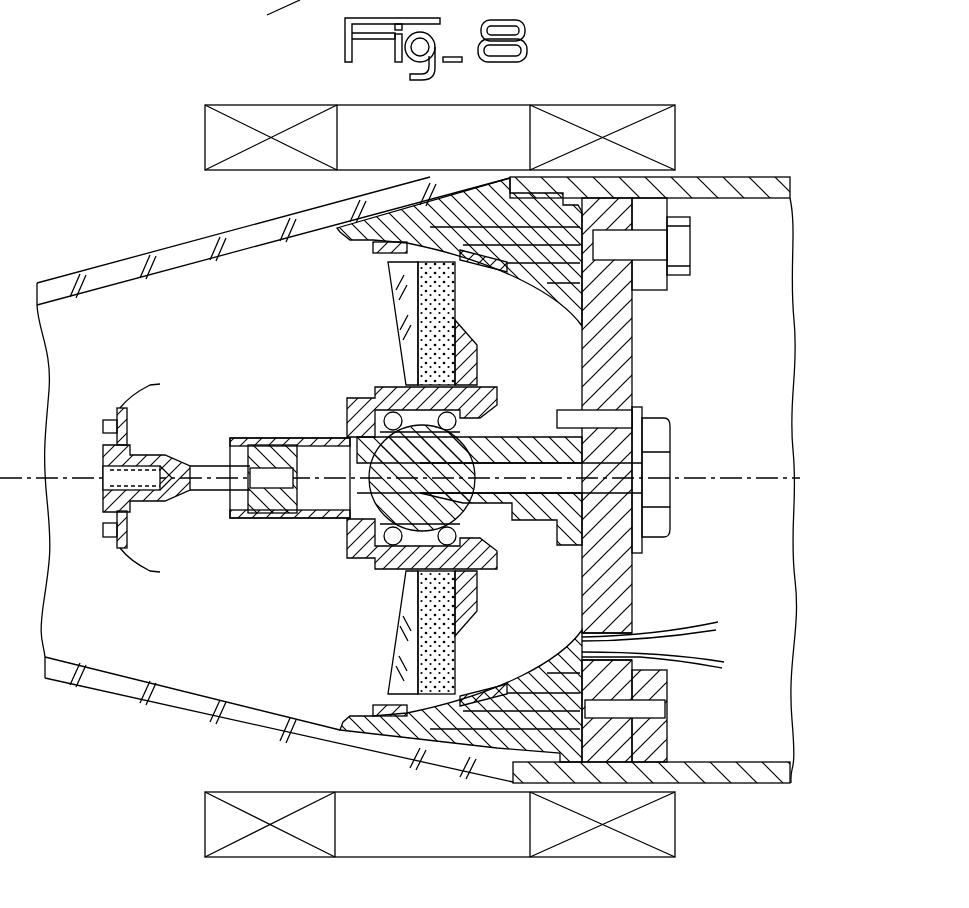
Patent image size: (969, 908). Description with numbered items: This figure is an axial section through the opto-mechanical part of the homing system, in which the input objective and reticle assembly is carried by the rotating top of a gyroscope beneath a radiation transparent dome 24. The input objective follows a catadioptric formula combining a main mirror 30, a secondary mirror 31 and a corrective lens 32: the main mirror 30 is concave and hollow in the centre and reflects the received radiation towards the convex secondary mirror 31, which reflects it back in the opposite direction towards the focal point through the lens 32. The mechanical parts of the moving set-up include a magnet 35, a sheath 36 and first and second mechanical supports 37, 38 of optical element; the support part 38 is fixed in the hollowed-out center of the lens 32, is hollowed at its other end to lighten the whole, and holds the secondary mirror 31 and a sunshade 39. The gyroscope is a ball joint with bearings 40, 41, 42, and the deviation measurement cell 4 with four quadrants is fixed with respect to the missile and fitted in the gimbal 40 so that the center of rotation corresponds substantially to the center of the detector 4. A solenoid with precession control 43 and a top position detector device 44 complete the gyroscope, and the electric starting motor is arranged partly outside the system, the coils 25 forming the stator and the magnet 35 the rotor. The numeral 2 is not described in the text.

The hub bushing 2 is at (350, 464).
The cell with four quadrants 4 is at (503, 470).
The radiation transparent dome 24 is at (150, 258).
The coils 25 is at (378, 162).
The main mirror 30 is at (400, 293).
The secondary mirror 31 is at (128, 417).
The corrective lens 32 is at (242, 497).
The magnet 35 is at (445, 292).
The sheath 36 is at (463, 597).
The first mechanical support 37 is at (327, 520).
The second mechanical support 38 is at (218, 470).
The sunshade 39 is at (163, 573).
The gimbal 40 is at (440, 452).
The bearing 41 is at (452, 538).
The bearing 42 is at (472, 532).
The solenoid with precession control 43 is at (556, 285).
The top position detector device 44 is at (367, 252).